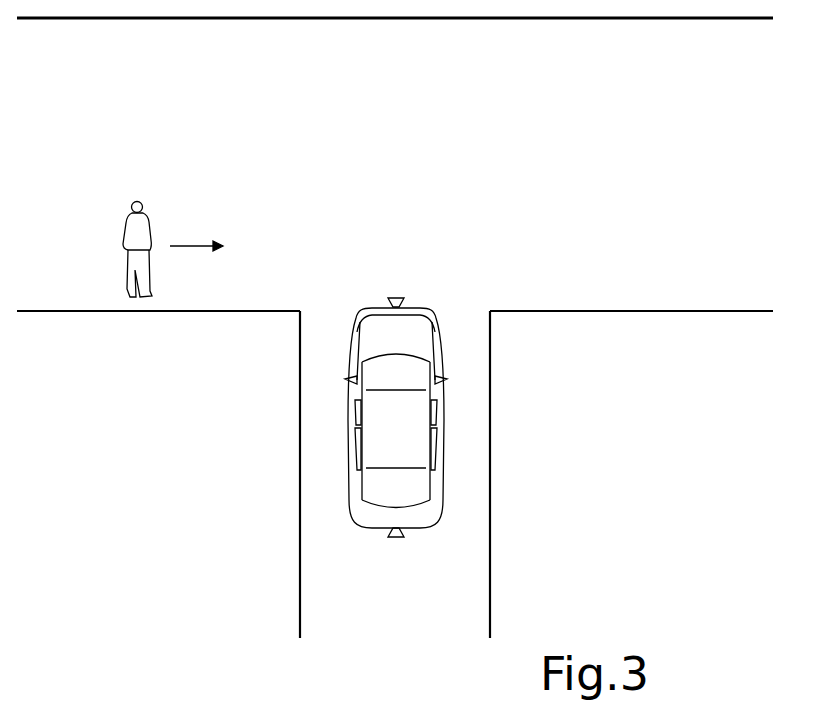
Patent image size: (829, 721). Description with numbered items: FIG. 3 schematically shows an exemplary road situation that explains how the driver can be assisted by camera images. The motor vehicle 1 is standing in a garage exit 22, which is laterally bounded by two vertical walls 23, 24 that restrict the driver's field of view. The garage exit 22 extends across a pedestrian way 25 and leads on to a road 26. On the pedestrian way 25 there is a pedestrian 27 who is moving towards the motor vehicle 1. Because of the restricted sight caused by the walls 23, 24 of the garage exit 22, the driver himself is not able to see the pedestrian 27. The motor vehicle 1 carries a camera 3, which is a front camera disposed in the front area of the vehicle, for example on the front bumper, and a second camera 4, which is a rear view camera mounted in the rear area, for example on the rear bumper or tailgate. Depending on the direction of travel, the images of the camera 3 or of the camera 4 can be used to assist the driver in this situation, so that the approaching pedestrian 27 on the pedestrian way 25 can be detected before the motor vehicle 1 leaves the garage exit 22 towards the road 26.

The motor vehicle 1 is at (348, 428).
The camera 3 is at (396, 297).
The second camera 4 is at (397, 538).
The garage exit 22 is at (462, 388).
The vertical wall 23 is at (299, 483).
The vertical wall 24 is at (491, 504).
The pedestrian way 25 is at (531, 281).
The road 26 is at (411, 135).
The pedestrian 27 is at (113, 206).